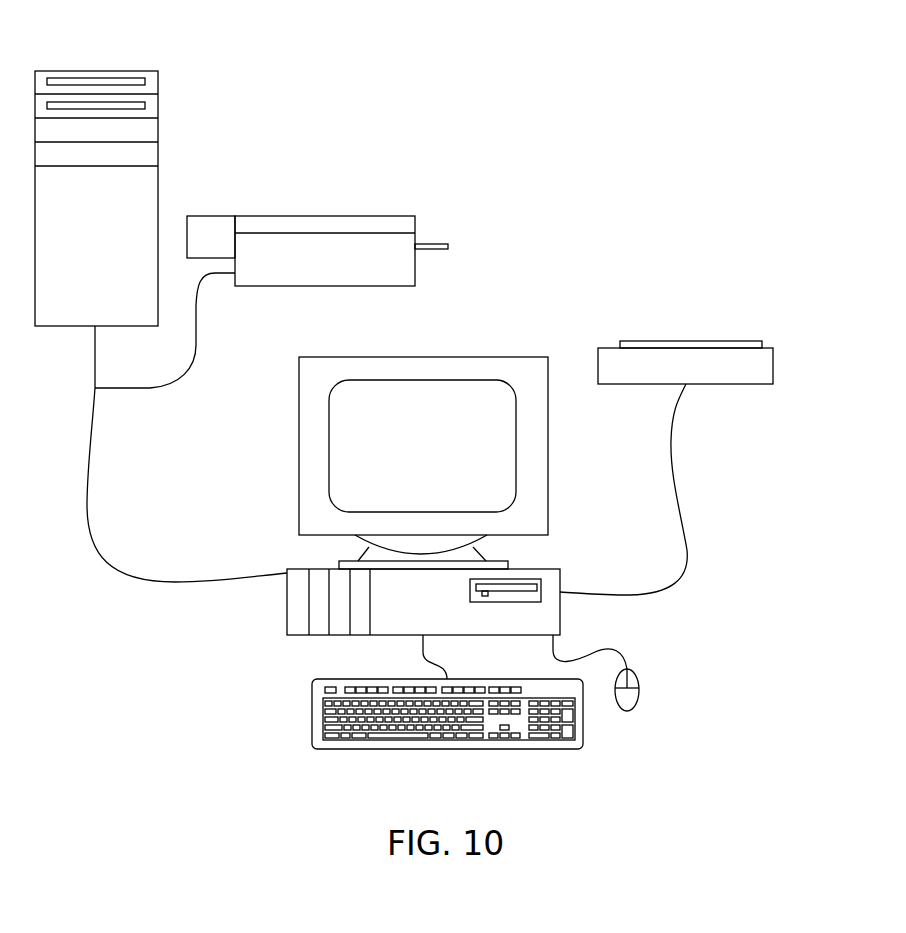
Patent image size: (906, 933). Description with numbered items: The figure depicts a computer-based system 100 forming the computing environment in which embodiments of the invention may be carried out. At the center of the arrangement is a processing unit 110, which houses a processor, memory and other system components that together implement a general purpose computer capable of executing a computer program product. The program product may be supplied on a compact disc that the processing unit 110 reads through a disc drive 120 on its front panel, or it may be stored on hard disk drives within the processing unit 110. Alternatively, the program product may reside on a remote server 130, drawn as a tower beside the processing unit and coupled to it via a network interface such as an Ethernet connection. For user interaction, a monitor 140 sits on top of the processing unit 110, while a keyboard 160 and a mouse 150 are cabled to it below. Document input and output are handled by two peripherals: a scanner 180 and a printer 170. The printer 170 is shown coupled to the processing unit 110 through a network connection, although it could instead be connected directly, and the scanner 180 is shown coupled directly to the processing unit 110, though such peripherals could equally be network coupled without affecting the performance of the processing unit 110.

The computer-based system 100 is at (583, 113).
The processing unit 110 is at (287, 610).
The disc drive 120 is at (556, 590).
The server 130 is at (158, 192).
The monitor 140 is at (501, 357).
The mouse 150 is at (639, 700).
The keyboard 160 is at (312, 714).
The printer 170 is at (370, 216).
The scanner 180 is at (713, 341).